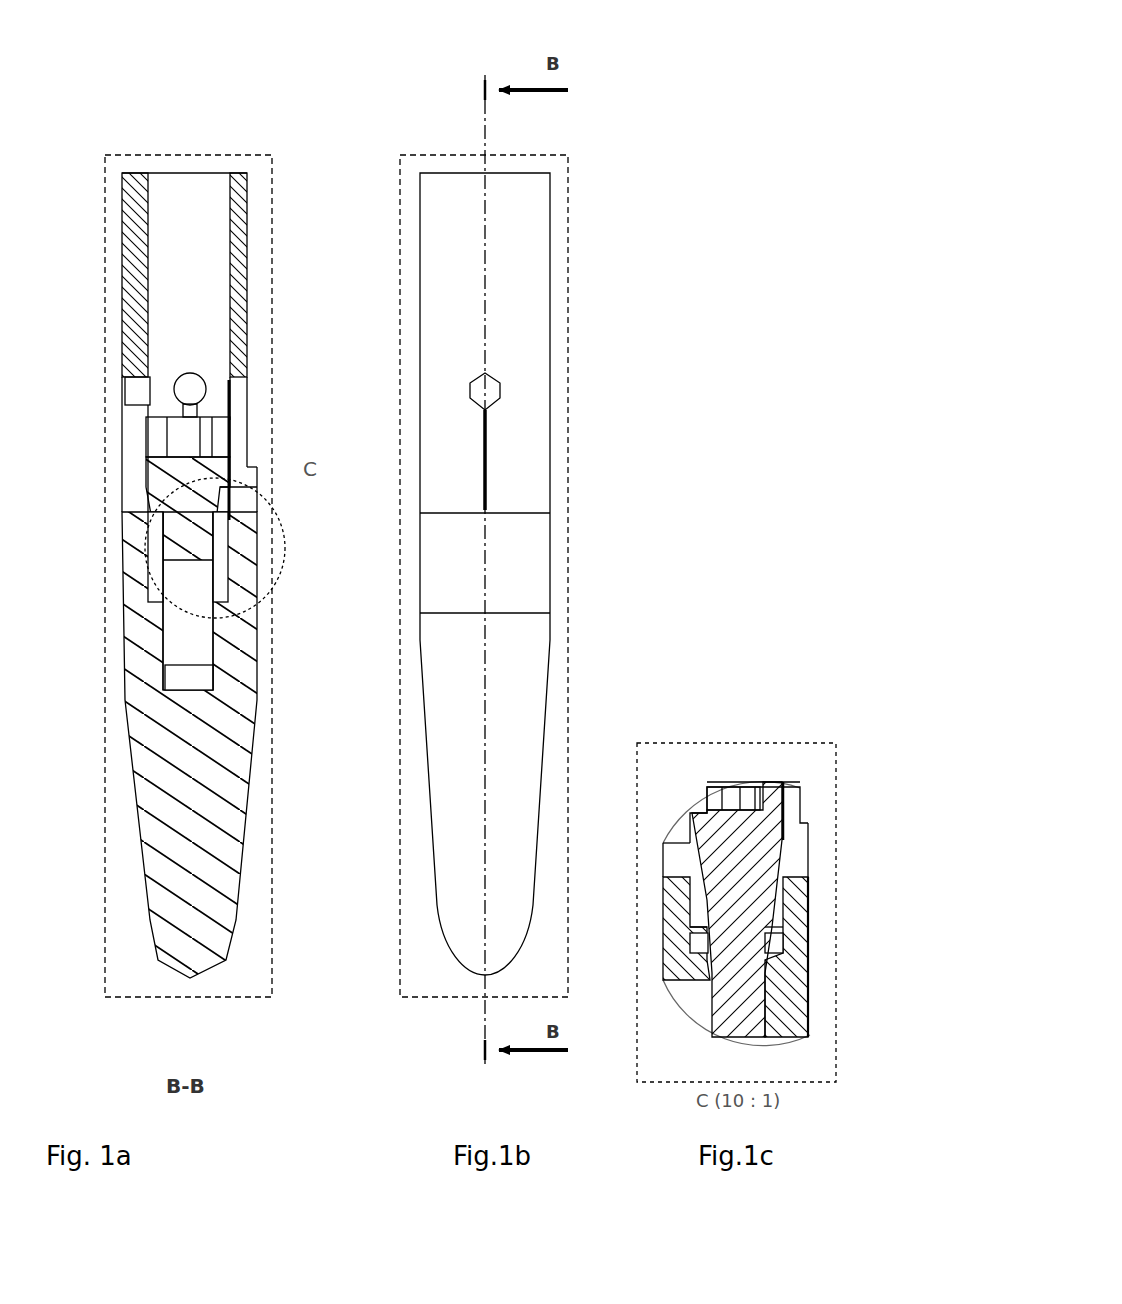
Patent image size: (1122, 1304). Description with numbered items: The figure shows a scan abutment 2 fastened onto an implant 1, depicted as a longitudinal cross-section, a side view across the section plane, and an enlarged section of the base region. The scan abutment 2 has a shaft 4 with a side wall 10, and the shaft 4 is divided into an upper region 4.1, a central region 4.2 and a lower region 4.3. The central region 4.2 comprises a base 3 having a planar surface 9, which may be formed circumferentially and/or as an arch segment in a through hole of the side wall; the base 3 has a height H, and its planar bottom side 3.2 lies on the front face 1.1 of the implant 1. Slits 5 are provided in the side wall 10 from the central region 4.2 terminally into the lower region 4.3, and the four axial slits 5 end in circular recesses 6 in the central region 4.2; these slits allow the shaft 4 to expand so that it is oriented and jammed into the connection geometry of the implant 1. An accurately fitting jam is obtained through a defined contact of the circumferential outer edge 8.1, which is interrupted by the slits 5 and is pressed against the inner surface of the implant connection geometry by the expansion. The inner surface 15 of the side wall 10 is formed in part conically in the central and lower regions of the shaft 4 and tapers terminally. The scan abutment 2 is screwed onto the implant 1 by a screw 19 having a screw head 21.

In FIG. 1A, the implant 1 is at (240, 766).
In FIG. 1C, the implant 1 is at (735, 930).
In FIG. 1A, the front face of the implant 1.1 is at (244, 501).
In FIG. 1A, the scan abutment 2 is at (172, 107).
In FIG. 1C, the base 3 is at (790, 827).
In FIG. 1A, the planar bottom side of the base 3.2 is at (259, 491).
In FIG. 1A, the shaft 4 is at (220, 260).
In FIG. 1A, the upper region of the shaft 4.1 is at (283, 148).
In FIG. 1A, the central region of the shaft 4.2 is at (110, 362).
In FIG. 1A, the lower region of the shaft 4.3 is at (110, 488).
In FIG. 1A, the slits 5 is at (243, 455).
In FIG. 1B, the slits 5 is at (493, 452).
In FIG. 1A, the circular recesses 6 is at (241, 371).
In FIG. 1B, the circular recesses 6 is at (493, 369).
In FIG. 1C, the outer edge 8.1 is at (688, 906).
In FIG. 1C, the planar surface 9 is at (806, 783).
In FIG. 1A, the side wall 10 is at (239, 148).
In FIG. 1B, the side wall 10 is at (485, 574).
In FIG. 1A, the inner surface of the side wall 15 is at (183, 266).
In FIG. 1A, the screw 19 is at (194, 603).
In FIG. 1C, the screw 19 is at (750, 906).
In FIG. 1A, the screw head 21 is at (199, 407).